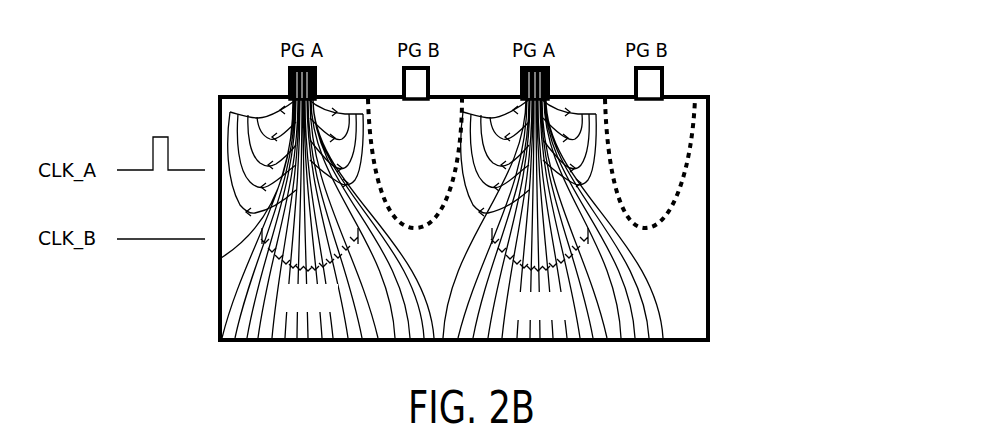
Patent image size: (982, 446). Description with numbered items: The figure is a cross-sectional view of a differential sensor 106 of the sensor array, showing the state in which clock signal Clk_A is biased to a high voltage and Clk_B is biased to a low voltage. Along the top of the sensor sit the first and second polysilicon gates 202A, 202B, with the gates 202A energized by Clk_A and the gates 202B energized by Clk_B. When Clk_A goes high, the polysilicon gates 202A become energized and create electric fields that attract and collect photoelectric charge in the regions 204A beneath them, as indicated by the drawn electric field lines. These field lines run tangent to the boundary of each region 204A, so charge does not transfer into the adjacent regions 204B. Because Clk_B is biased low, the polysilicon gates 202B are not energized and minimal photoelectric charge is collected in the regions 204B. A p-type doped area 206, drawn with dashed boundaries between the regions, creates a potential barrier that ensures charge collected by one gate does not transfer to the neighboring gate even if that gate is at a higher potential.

The differential sensor 106 is at (812, 62).
The first polysilicon gate 202A is at (272, 40).
The second polysilicon gate 202B is at (390, 40).
The region corresponding to the first polysilicon gate 204A is at (333, 308).
The region corresponding to the second polysilicon gate 204B is at (440, 165).
The p-type doped area 206 is at (416, 231).